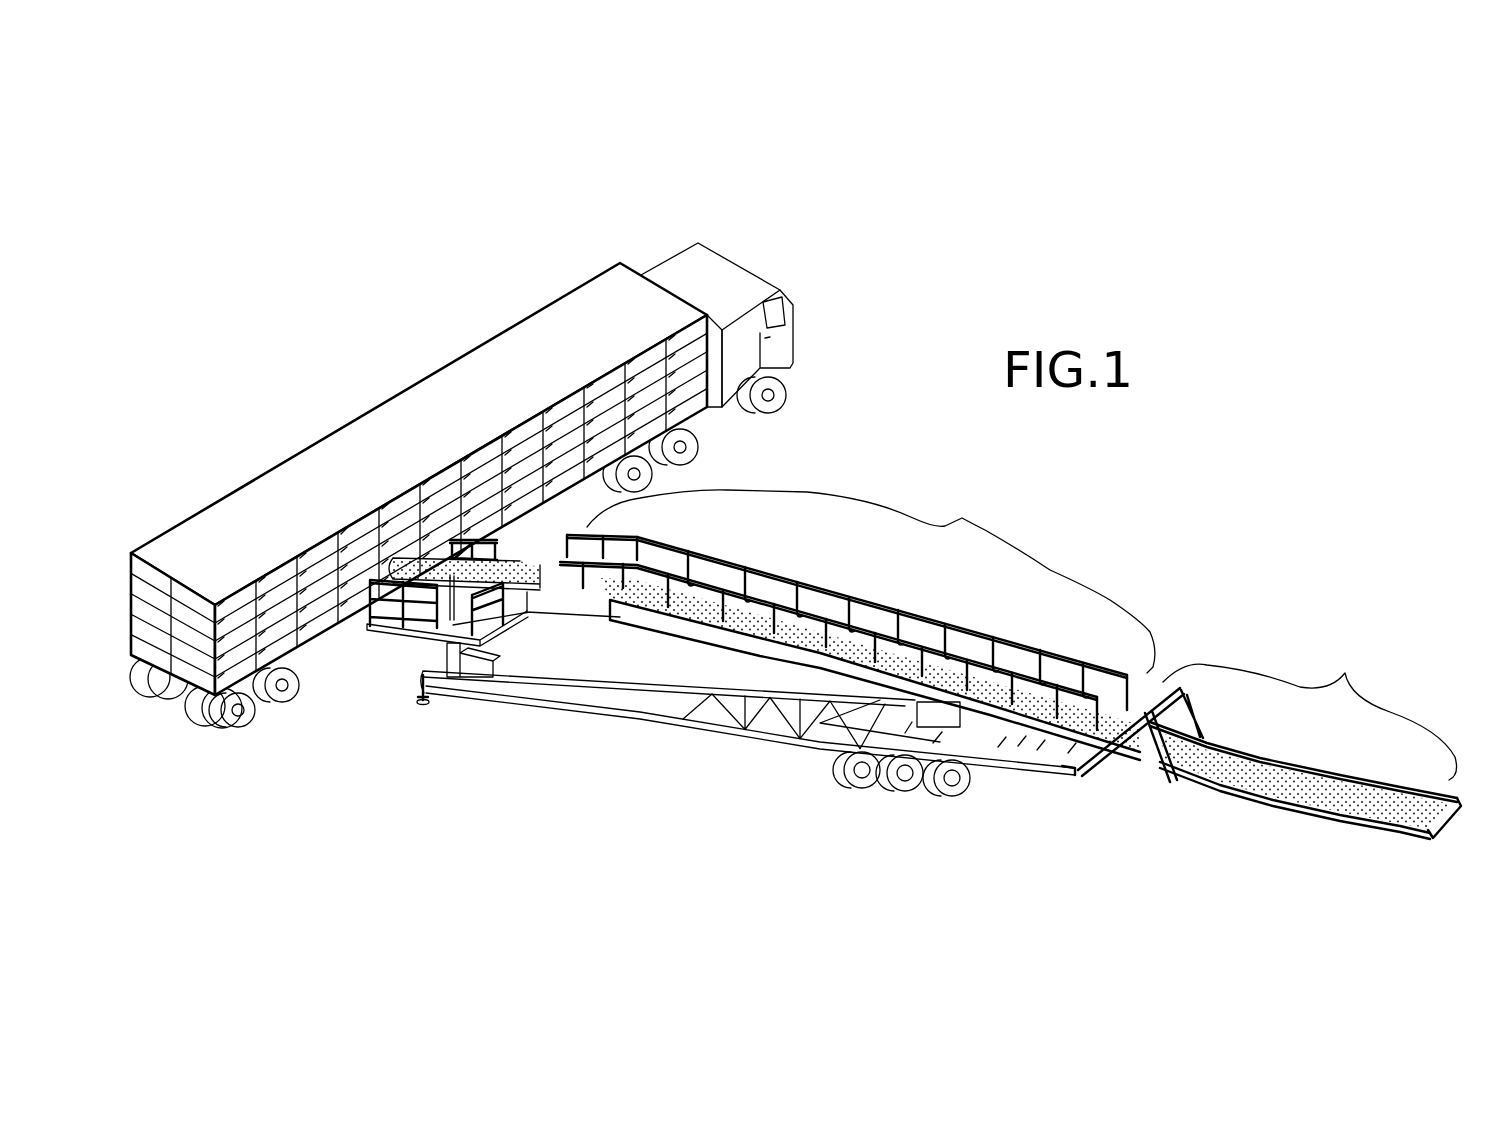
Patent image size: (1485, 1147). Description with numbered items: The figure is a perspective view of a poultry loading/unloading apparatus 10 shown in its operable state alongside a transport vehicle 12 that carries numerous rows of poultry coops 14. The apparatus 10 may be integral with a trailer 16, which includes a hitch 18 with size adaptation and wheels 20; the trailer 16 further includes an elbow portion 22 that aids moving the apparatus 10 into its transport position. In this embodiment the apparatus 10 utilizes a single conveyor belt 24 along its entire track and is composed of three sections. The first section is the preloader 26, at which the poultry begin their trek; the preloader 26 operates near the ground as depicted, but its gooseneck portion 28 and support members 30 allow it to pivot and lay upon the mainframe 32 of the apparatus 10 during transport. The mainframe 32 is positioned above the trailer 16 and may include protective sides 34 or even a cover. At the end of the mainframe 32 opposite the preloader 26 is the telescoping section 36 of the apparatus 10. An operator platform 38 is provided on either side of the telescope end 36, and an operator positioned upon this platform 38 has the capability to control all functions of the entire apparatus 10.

The poultry loading/unloading apparatus 10 is at (883, 632).
The transport vehicle 12 is at (461, 485).
The poultry coops 14 is at (307, 553).
The trailer 16 is at (707, 725).
The hitch 18 is at (418, 689).
The wheels 20 is at (930, 793).
The elbow portion 22 is at (473, 677).
The conveyor belt 24 is at (520, 570).
The preloader 26 is at (1305, 734).
The gooseneck portion 28 is at (1073, 773).
The support members 30 is at (1105, 758).
The mainframe 32 is at (857, 611).
The protective sides 34 is at (985, 637).
The telescoping section 36 is at (462, 547).
The operator platform 38 is at (483, 538).